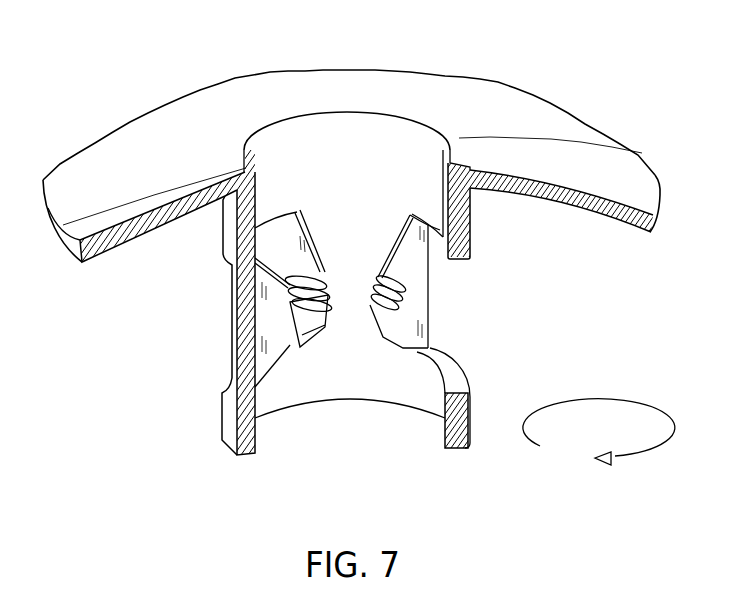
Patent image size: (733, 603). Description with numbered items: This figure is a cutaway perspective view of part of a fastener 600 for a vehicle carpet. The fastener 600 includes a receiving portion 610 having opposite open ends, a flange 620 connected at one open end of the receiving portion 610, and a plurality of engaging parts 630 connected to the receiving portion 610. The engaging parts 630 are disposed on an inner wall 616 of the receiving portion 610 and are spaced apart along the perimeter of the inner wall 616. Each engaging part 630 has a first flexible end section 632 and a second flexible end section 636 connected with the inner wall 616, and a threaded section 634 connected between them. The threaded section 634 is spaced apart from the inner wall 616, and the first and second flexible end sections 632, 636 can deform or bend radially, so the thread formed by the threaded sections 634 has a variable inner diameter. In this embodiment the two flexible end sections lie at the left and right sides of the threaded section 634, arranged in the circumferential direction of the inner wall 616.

The fastener 600 is at (628, 50).
The receiving portion 610 is at (232, 422).
The inner wall 616 is at (400, 157).
The flange 620 is at (108, 133).
The engaging part 630 is at (280, 230).
The first flexible end section 632 is at (288, 232).
The threaded section 634 is at (378, 296).
The second flexible end section 636 is at (272, 337).